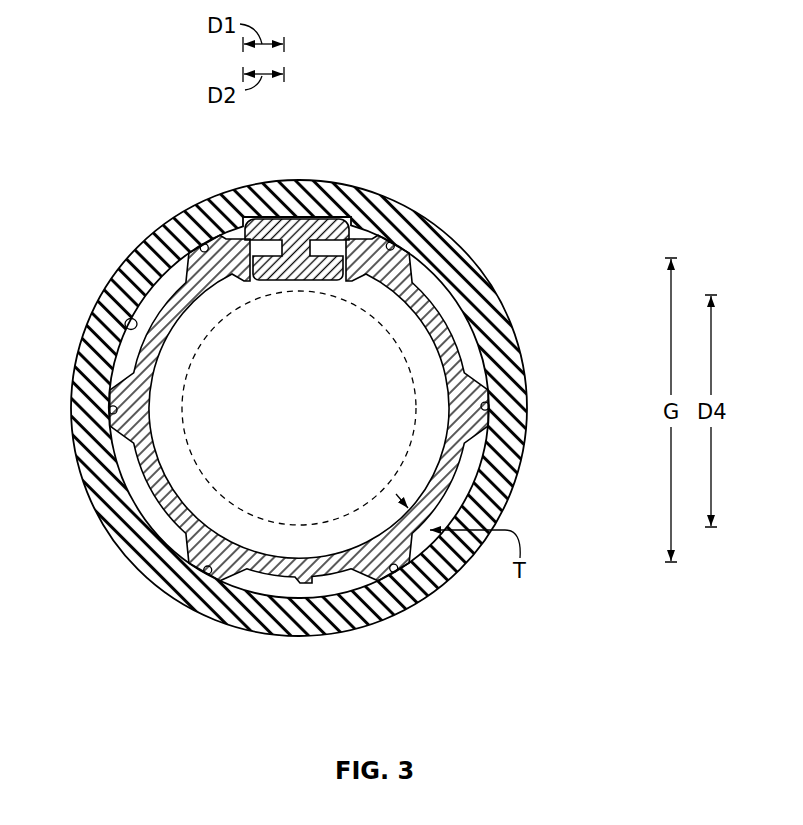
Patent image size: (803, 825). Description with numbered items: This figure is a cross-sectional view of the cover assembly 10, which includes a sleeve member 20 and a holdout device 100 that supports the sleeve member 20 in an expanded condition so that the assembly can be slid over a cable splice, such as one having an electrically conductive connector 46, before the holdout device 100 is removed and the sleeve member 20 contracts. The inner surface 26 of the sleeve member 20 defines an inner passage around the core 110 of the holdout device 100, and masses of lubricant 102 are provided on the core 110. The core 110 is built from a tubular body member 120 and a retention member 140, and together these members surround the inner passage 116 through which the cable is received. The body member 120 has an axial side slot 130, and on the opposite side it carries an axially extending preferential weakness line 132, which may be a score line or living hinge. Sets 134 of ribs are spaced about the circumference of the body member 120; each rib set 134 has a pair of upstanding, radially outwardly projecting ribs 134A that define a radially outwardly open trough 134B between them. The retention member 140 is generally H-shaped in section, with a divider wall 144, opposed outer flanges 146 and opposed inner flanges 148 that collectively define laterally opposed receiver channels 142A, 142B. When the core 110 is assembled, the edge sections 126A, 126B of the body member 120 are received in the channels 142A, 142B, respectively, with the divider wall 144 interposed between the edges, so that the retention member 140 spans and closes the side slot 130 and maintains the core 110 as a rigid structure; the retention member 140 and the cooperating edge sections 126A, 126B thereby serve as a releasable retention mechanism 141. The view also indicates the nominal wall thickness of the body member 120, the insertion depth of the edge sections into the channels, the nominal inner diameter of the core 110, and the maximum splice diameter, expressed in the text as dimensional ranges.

The cover assembly 10 is at (121, 73).
The sleeve member 20 is at (82, 403).
The inner surface 26 is at (126, 321).
The connector 46 is at (371, 595).
The holdout device 100 is at (266, 588).
The masses of lubricant 102 is at (489, 408).
The core 110 is at (422, 548).
The inner passage 116 is at (316, 467).
The tubular body member 120 is at (466, 336).
The edge section 126A is at (260, 282).
The edge section 126B is at (328, 282).
The slot 130 is at (291, 234).
The preferential weakness line 132 is at (300, 584).
The rib set 134 is at (483, 397).
The rib 134A is at (190, 566).
The trough 134B is at (187, 582).
The retention member 140 is at (307, 186).
The releasable retention mechanism 141 is at (300, 178).
The receiver channel 142A is at (232, 239).
The receiver channel 142B is at (368, 239).
The divider wall 144 is at (292, 282).
The outer flanges 146 is at (256, 249).
The inner flanges 148 is at (272, 282).